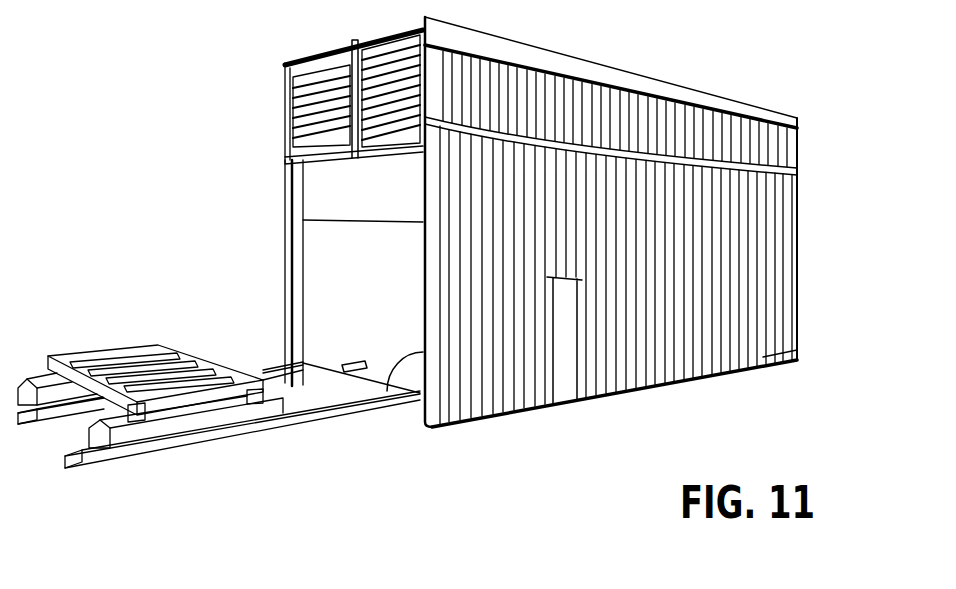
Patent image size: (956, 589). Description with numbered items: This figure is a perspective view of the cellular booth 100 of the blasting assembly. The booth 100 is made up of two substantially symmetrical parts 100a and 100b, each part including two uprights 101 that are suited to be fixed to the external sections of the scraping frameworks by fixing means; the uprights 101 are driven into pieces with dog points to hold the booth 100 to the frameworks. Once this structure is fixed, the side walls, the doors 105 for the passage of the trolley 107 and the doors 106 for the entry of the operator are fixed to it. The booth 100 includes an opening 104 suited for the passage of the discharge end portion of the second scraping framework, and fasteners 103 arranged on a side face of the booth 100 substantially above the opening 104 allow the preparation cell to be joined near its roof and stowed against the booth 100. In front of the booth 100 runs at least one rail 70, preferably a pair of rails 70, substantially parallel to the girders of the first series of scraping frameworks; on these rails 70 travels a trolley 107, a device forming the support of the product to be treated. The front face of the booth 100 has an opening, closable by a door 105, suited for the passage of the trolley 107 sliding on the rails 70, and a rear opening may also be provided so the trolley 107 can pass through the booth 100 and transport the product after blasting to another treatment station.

The rail 70 is at (195, 443).
The booth 100 is at (806, 176).
The first part of the booth 100a is at (302, 42).
The second part of the booth 100b is at (562, 47).
The upright 101 is at (295, 307).
The fastener 103 is at (706, 160).
The opening 104 is at (762, 357).
The door 105 is at (330, 265).
The operator door 106 is at (562, 388).
The trolley 107 is at (262, 457).